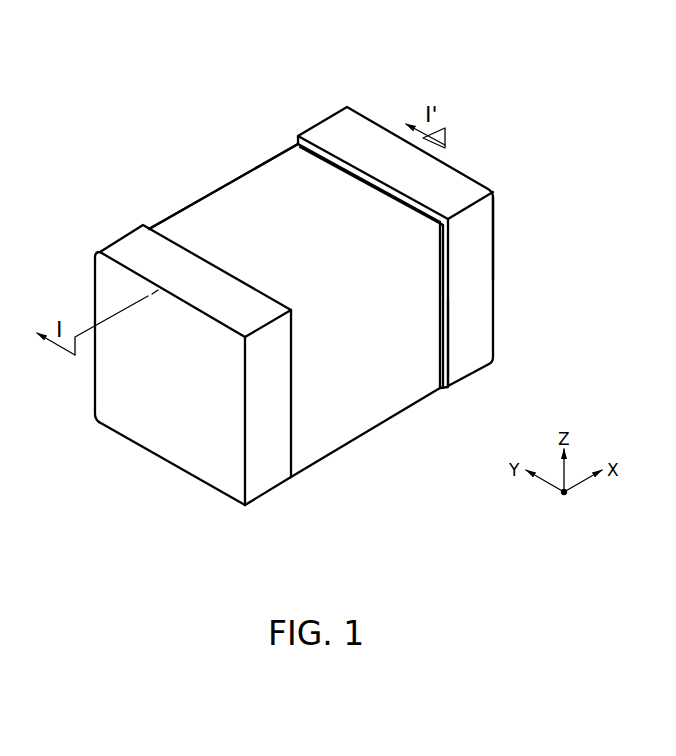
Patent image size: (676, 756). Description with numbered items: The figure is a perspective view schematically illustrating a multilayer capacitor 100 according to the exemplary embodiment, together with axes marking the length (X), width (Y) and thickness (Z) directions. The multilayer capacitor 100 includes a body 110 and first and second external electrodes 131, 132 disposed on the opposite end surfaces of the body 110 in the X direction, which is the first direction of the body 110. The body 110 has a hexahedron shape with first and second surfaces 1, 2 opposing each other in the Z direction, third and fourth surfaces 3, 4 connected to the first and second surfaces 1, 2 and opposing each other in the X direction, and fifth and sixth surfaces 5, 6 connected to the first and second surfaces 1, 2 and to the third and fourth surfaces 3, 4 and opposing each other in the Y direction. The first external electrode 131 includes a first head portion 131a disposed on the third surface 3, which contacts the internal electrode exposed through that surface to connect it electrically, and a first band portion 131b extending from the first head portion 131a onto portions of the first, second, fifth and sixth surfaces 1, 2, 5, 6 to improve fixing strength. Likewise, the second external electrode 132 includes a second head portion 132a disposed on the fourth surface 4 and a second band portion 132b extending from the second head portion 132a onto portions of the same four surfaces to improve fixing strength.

The multilayer capacitor 100 is at (193, 28).
The body 110 is at (232, 198).
The first surface 1 is at (363, 431).
The second surface 2 is at (292, 189).
The third surface 3 is at (141, 373).
The fourth surface 4 is at (473, 177).
The fifth surface 5 is at (409, 347).
The sixth surface 6 is at (184, 213).
The first external electrode 131 is at (83, 473).
The first head portion 131a is at (177, 460).
The first band portion 131b is at (260, 462).
The second external electrode 132 is at (565, 235).
The second head portion 132a is at (497, 242).
The second band portion 132b is at (478, 298).